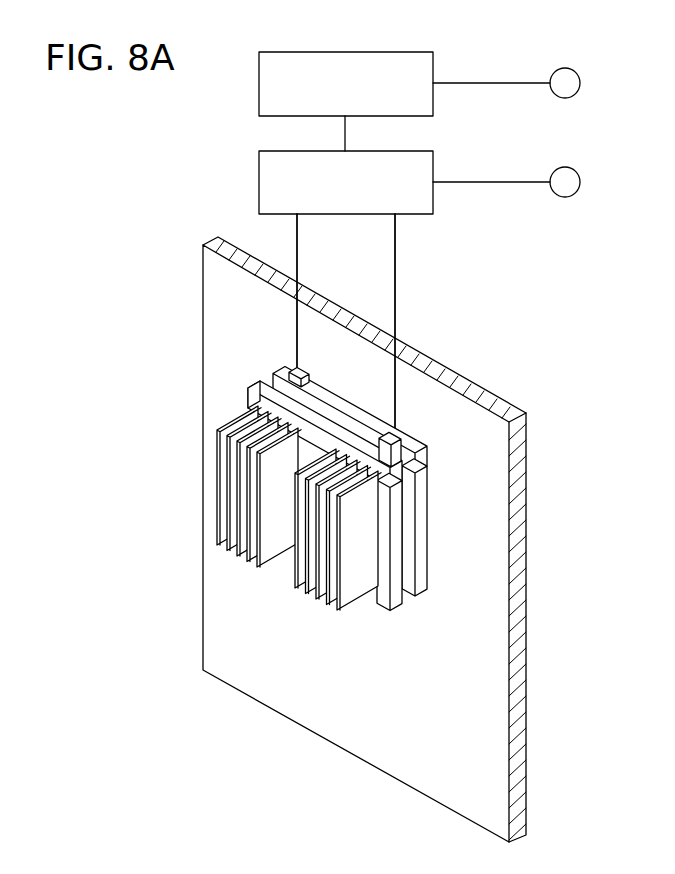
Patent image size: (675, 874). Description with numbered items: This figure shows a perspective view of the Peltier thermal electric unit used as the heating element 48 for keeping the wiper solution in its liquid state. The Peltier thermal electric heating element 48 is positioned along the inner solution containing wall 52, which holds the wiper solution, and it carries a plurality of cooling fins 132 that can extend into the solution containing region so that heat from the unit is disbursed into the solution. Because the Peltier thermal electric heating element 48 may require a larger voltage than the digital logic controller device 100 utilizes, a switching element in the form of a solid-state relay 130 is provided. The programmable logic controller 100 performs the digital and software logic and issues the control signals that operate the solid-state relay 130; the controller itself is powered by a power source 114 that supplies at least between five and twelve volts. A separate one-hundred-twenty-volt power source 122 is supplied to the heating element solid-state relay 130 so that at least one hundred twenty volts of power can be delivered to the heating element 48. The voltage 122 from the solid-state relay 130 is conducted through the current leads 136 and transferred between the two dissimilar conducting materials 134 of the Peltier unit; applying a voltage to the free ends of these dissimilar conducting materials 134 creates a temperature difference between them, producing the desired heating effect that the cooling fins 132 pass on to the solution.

The programmable logic controller 100 is at (375, 52).
The power source 114 is at (492, 83).
The 120-volt power source 122 is at (497, 182).
The solid-state relay 130 is at (413, 216).
The current leads 136 is at (397, 298).
The inner solution containing wall 52 is at (432, 397).
The Peltier thermal electric heating element 48 is at (255, 496).
The cooling fins 132 is at (300, 573).
The conducting materials 134 is at (422, 525).